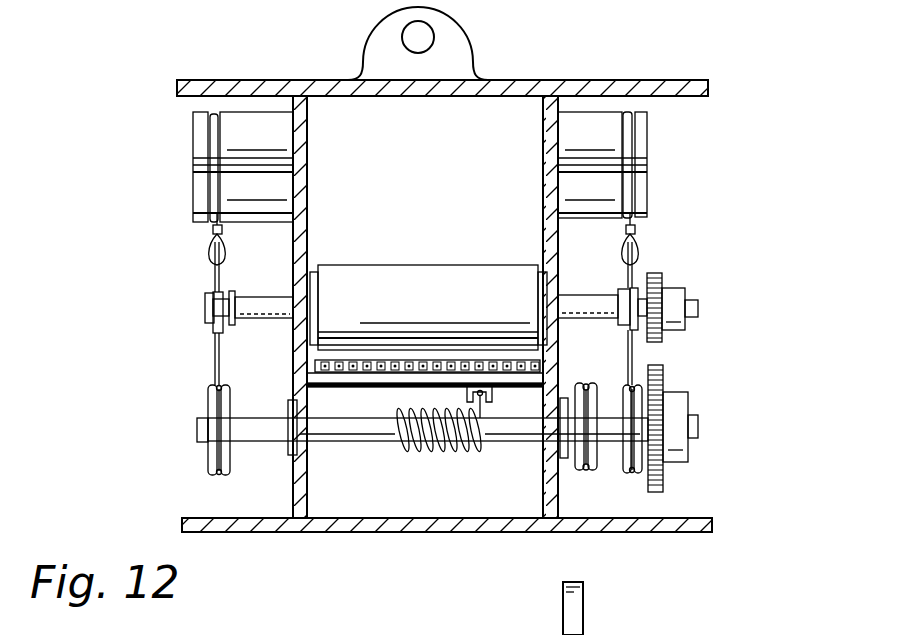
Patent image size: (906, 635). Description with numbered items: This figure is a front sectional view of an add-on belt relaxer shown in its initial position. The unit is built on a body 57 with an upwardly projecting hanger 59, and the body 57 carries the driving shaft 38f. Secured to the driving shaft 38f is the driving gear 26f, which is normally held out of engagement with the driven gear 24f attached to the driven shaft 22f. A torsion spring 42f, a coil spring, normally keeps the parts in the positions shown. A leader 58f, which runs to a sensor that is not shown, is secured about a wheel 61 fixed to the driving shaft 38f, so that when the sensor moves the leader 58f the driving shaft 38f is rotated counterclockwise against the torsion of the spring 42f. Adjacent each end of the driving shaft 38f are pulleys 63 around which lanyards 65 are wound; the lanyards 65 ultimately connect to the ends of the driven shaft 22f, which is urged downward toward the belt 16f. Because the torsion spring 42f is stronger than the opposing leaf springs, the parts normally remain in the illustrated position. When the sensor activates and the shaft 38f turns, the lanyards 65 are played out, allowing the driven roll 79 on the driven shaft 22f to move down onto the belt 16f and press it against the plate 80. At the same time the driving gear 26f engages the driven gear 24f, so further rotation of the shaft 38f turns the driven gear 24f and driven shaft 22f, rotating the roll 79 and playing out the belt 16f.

The body 57 is at (565, 80).
The hanger 59 is at (463, 38).
The lanyards 65 is at (216, 362).
The driven roll 79 is at (448, 272).
The belt 16f is at (392, 361).
The plate 80 is at (332, 380).
The driving shaft 38f is at (510, 443).
The torsion spring 42f is at (440, 453).
The pulleys 63 is at (210, 400).
The leader 58f is at (586, 470).
The wheel 61 is at (598, 384).
The driven gear 24f is at (660, 278).
The driven shaft 22f is at (702, 308).
The driving gear 26f is at (665, 475).